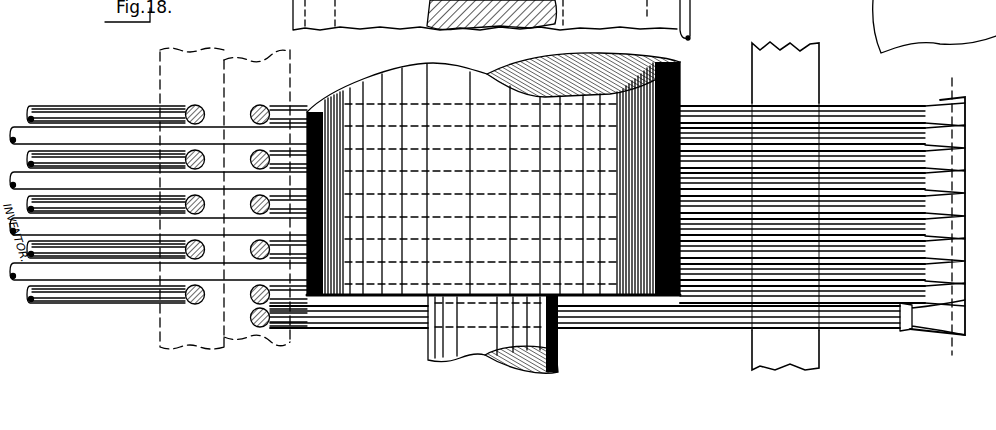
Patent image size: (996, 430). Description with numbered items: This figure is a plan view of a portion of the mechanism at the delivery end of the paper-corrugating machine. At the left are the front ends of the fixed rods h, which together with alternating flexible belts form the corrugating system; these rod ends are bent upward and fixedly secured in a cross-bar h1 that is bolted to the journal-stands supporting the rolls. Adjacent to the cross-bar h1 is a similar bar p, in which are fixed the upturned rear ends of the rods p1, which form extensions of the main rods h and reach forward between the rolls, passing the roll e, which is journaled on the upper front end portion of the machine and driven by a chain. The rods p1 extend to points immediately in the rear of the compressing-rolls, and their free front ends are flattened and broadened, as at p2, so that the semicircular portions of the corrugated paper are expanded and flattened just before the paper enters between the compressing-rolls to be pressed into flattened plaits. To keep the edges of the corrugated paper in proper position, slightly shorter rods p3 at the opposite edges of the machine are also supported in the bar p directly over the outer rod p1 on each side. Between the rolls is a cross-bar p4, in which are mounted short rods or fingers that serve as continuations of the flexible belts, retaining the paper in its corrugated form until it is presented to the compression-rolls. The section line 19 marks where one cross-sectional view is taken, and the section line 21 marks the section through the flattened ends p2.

The fixed rods h is at (136, 113).
The cross-bar h1 is at (192, 198).
The bar p is at (265, 198).
The rods p1 is at (715, 118).
The flattened and broadened ends p2 is at (958, 115).
The shorter rods p3 is at (583, 320).
The cross-bar p4 is at (785, 206).
The roll e is at (493, 213).
The section line 19 is at (698, 23).
The section line 21 is at (951, 218).